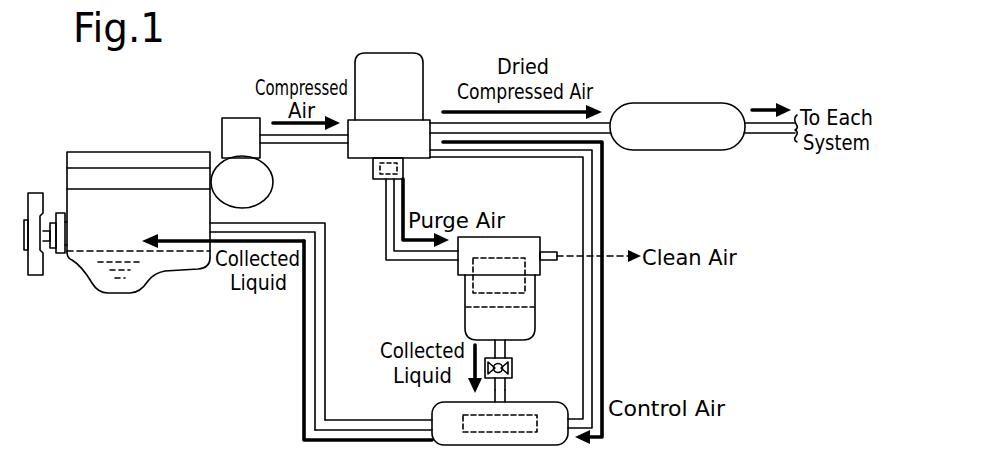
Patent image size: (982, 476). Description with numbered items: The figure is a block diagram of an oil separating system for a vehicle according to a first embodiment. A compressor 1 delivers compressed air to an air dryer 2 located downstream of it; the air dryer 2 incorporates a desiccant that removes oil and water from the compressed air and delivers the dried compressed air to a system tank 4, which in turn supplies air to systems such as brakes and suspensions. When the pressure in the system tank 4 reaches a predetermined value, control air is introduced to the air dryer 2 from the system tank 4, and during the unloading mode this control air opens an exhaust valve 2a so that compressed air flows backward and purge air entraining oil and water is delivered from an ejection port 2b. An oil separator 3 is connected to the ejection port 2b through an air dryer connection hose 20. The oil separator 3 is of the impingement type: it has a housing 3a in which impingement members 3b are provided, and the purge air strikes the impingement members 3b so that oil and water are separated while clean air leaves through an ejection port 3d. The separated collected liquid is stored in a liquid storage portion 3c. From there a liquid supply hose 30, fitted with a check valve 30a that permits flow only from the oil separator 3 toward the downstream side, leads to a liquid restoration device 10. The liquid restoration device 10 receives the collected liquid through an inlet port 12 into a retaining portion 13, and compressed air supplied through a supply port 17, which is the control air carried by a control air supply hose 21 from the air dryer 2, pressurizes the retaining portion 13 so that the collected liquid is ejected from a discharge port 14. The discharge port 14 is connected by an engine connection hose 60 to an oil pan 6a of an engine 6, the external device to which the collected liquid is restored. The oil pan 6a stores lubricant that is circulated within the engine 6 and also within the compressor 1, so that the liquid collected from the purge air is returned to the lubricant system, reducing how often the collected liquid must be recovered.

The compressor 1 is at (237, 118).
The air dryer 2 is at (425, 72).
The exhaust valve 2a is at (373, 174).
The ejection port 2b is at (400, 180).
The oil separator 3 is at (493, 266).
The housing 3a is at (465, 297).
The impingement members 3b is at (508, 256).
The liquid storage portion 3c is at (466, 330).
The ejection port 3d is at (550, 262).
The system tank 4 is at (697, 103).
The engine 6 is at (117, 221).
The oil pan 6a is at (165, 272).
The liquid restoration device 10 is at (542, 402).
The inlet port 12 is at (510, 400).
The retaining portion 13 is at (476, 433).
The discharge port 14 is at (432, 414).
The supply port 17 is at (576, 441).
The air dryer connection hose 20 is at (385, 212).
The control air supply hose 21 is at (582, 165).
The liquid supply hose 30 is at (507, 342).
The check valve 30a is at (512, 366).
The engine connection hose 60 is at (326, 300).